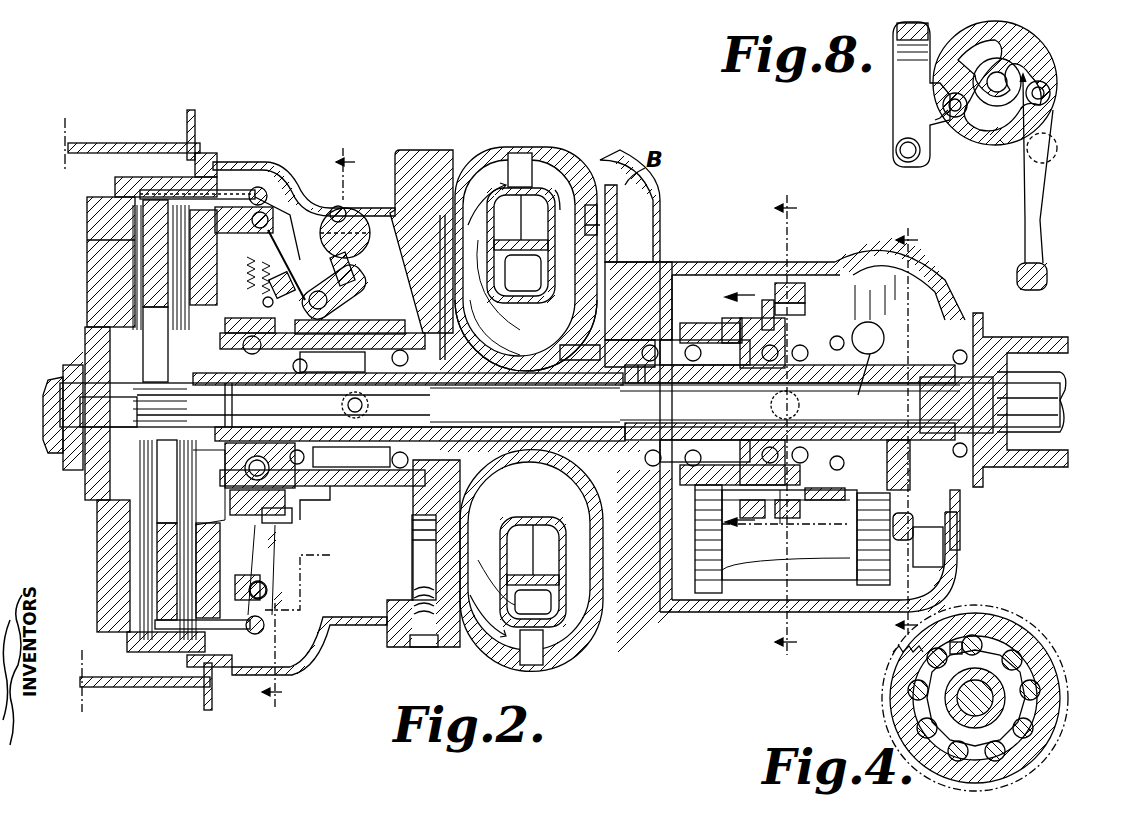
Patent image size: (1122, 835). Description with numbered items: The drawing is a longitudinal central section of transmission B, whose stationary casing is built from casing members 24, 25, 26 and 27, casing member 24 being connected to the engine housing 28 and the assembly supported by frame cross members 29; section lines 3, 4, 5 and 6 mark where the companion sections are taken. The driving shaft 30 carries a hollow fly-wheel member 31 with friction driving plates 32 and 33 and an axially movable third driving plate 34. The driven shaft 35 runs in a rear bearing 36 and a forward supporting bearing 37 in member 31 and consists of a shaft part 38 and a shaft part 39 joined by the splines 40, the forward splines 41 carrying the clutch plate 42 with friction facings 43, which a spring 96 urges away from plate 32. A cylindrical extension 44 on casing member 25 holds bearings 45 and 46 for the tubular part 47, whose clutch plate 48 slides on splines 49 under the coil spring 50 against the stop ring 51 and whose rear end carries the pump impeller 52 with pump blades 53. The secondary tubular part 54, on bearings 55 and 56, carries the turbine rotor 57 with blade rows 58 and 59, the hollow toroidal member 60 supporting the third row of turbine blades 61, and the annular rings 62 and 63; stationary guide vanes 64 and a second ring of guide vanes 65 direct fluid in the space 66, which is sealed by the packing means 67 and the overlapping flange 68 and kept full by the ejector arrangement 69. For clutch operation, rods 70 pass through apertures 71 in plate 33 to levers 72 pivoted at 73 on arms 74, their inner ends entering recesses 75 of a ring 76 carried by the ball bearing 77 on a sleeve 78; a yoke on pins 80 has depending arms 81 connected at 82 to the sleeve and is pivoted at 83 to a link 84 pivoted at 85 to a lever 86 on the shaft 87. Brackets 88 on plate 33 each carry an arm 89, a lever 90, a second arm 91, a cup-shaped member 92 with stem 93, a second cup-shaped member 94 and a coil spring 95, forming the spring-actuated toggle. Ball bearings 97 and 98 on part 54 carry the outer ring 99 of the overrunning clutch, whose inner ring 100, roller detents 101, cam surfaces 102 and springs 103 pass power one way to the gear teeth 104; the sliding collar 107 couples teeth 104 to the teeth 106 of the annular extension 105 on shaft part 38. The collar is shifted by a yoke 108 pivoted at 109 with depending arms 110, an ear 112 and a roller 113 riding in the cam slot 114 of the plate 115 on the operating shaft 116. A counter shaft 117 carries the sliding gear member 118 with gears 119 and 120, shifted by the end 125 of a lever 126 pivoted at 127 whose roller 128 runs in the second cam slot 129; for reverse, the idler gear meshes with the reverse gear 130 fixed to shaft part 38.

In FIG. 2, the housing wall 24 is at (290, 159).
In FIG. 2, the hub housing 25 is at (462, 162).
In FIG. 2, the housing wall 26 is at (630, 252).
In FIG. 2, the gear housing 27 is at (722, 273).
In FIG. 2, the mounting flange 28 is at (160, 143).
In FIG. 2, the flange wall 29 is at (196, 126).
In FIG. 2, the input shaft 30 is at (55, 378).
In FIG. 2, the clutch housing 31 is at (87, 202).
In FIG. 2, the housing wall 32 is at (95, 240).
In FIG. 2, the clutch hub 33 is at (218, 540).
In FIG. 2, the clutch hub 34 is at (162, 298).
In FIG. 2, the output shaft 35 is at (1025, 380).
In FIG. 2, the bearing housing 36 is at (968, 322).
In FIG. 2, the shaft flange 37 is at (75, 455).
In FIG. 2, the bearing sleeve 38 is at (935, 434).
In FIG. 2, the main shaft 39 is at (732, 393).
In FIG. 2, the pin 40 is at (868, 358).
In FIG. 2, the hollow shaft 41 is at (185, 405).
In FIG. 2, the clutch plates 42 is at (150, 518).
In FIG. 2, the clutch plates 43 is at (143, 258).
In FIG. 2, the bearing cap 44 is at (372, 328).
In FIG. 2, the spacer 45 is at (351, 460).
In FIG. 2, the retainer 46 is at (392, 490).
In FIG. 2, the bearing race 47 is at (368, 485).
In FIG. 2, the pressure plate 48 is at (205, 520).
In FIG. 2, the bearing housing 49 is at (225, 462).
In FIG. 2, the spline 50 is at (258, 383).
In FIG. 2, the sleeve 51 is at (210, 369).
In FIG. 2, the drum wall 52 is at (475, 350).
In FIG. 2, the drum chamber 53 is at (490, 520).
In FIG. 2, the shaft 54 is at (676, 383).
In FIG. 4, the shaft 54 is at (998, 660).
In FIG. 2, the spline 55 is at (645, 383).
In FIG. 2, the pin 56 is at (798, 402).
In FIG. 2, the drum flange 57 is at (568, 350).
In FIG. 2, the vane 58 is at (572, 295).
In FIG. 2, the vane 59 is at (572, 205).
In FIG. 2, the pocket 60 is at (521, 245).
In FIG. 2, the chamber 61 is at (488, 235).
In FIG. 2, the cover plate 62 is at (438, 232).
In FIG. 2, the seal 63 is at (598, 220).
In FIG. 2, the port 64 is at (525, 160).
In FIG. 2, the valve 65 is at (566, 250).
In FIG. 2, the drum 66 is at (560, 162).
In FIG. 2, the shaft bore 67 is at (512, 425).
In FIG. 2, the pocket 68 is at (492, 477).
In FIG. 2, the plug 69 is at (412, 577).
In FIG. 2, the pivot pin 70 is at (256, 190).
In FIG. 2, the rod 71 is at (225, 185).
In FIG. 2, the link 72 is at (272, 545).
In FIG. 2, the pivot 73 is at (267, 589).
In FIG. 2, the block 74 is at (240, 571).
In FIG. 2, the pin 75 is at (281, 508).
In FIG. 2, the collar 76 is at (245, 512).
In FIG. 2, the ball bearing 77 is at (249, 470).
In FIG. 2, the bearing race 78 is at (275, 324).
In FIG. 2, the sleeve 80 is at (315, 390).
In FIG. 2, the bore 81 is at (343, 408).
In FIG. 2, the pin 82 is at (363, 405).
In FIG. 2, the pivot 83 is at (316, 291).
In FIG. 2, the link 84 is at (330, 258).
In FIG. 2, the lever arm 85 is at (355, 275).
In FIG. 2, the lever 86 is at (360, 230).
In FIG. 2, the pin 87 is at (336, 206).
In FIG. 2, the spring 88 is at (247, 262).
In FIG. 2, the block 89 is at (255, 227).
In FIG. 2, the lever 90 is at (270, 222).
In FIG. 2, the clutch drum 91 is at (235, 300).
In FIG. 2, the pin 92 is at (273, 305).
In FIG. 2, the rod 93 is at (285, 245).
In FIG. 2, the spring 94 is at (262, 272).
In FIG. 2, the nut 95 is at (280, 290).
In FIG. 2, the coupling 96 is at (108, 412).
In FIG. 2, the race 97 is at (690, 335).
In FIG. 2, the cam 98 is at (760, 370).
In FIG. 2, the outer race 99 is at (703, 330).
In FIG. 4, the outer race 99 is at (895, 700).
In FIG. 2, the cage 100 is at (720, 367).
In FIG. 4, the cage 100 is at (1025, 675).
In FIG. 2, the inner race 101 is at (740, 345).
In FIG. 4, the inner race 101 is at (1005, 700).
In FIG. 4, the roller 102 is at (1030, 715).
In FIG. 4, the spring 103 is at (958, 642).
In FIG. 2, the gear 104 is at (760, 512).
In FIG. 4, the gear 104 is at (893, 655).
In FIG. 2, the collar 105 is at (818, 500).
In FIG. 2, the spacer 106 is at (790, 510).
In FIG. 2, the pin 107 is at (766, 298).
In FIG. 2, the lever 108 is at (800, 285).
In FIG. 8, the lever 108 is at (915, 70).
In FIG. 8, the block 109 is at (895, 40).
In FIG. 8, the pivot hole 110 is at (893, 125).
In FIG. 8, the arm 112 is at (936, 122).
In FIG. 8, the roller 113 is at (958, 118).
In FIG. 8, the slot 114 is at (945, 92).
In FIG. 2, the cam 115 is at (920, 318).
In FIG. 8, the cam 115 is at (1035, 50).
In FIG. 8, the hub 116 is at (1020, 75).
In FIG. 2, the collar 117 is at (935, 548).
In FIG. 2, the shaft 118 is at (826, 558).
In FIG. 2, the gear 119 is at (722, 588).
In FIG. 2, the gear 120 is at (878, 581).
In FIG. 2, the knob 125 is at (913, 522).
In FIG. 8, the knob 125 is at (1047, 280).
In FIG. 8, the lever 126 is at (1040, 190).
In FIG. 8, the pivot 127 is at (1050, 140).
In FIG. 8, the roller 128 is at (1050, 91).
In FIG. 8, the pin 129 is at (1005, 135).
In FIG. 2, the collar 130 is at (890, 465).
In FIG. 2, the section line 3 is at (296, 429).
In FIG. 2, the section line 4 is at (739, 413).
In FIG. 2, the section line 5 is at (773, 424).
In FIG. 2, the section line 6 is at (898, 431).